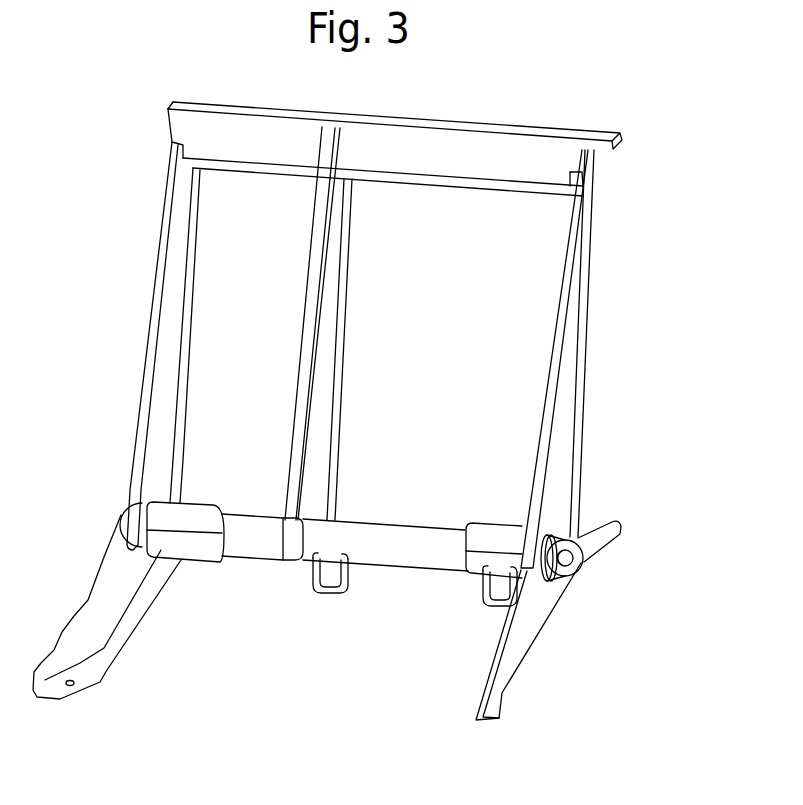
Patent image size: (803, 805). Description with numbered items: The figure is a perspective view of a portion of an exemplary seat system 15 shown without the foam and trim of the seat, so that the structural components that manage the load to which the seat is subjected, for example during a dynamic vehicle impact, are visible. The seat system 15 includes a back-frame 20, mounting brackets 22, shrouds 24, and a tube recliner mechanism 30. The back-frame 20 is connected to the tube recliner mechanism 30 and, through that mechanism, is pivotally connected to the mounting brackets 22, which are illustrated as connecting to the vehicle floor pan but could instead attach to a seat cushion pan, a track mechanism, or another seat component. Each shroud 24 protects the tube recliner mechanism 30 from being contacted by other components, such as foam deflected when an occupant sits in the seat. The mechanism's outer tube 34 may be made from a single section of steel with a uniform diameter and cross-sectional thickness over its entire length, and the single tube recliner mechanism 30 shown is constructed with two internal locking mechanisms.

The seat system 15 is at (434, 335).
The back-frame 20 is at (560, 340).
The mounting bracket 22 is at (117, 642).
The shroud 24 is at (187, 510).
The tube recliner mechanism 30 is at (596, 582).
The outer tube 34 is at (257, 531).